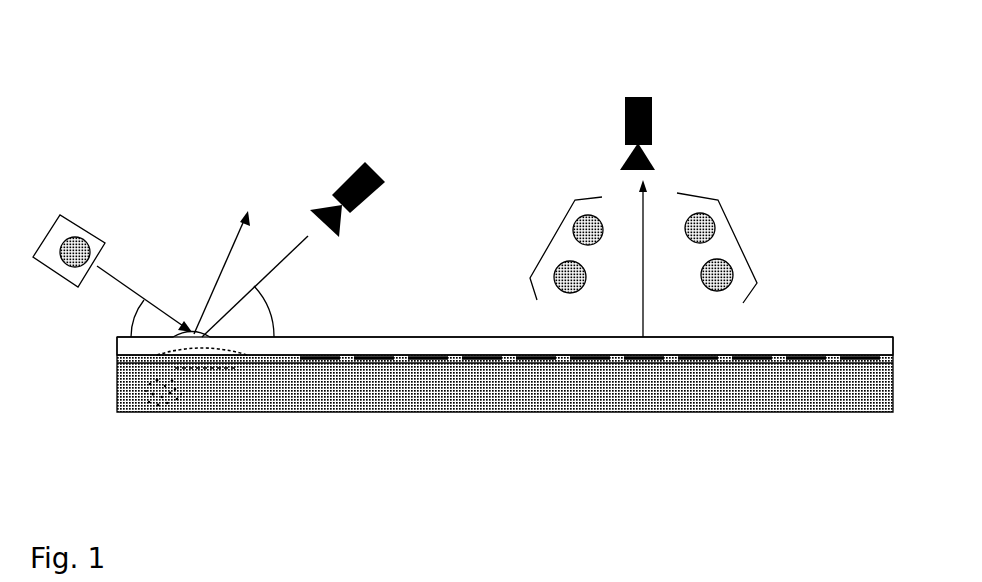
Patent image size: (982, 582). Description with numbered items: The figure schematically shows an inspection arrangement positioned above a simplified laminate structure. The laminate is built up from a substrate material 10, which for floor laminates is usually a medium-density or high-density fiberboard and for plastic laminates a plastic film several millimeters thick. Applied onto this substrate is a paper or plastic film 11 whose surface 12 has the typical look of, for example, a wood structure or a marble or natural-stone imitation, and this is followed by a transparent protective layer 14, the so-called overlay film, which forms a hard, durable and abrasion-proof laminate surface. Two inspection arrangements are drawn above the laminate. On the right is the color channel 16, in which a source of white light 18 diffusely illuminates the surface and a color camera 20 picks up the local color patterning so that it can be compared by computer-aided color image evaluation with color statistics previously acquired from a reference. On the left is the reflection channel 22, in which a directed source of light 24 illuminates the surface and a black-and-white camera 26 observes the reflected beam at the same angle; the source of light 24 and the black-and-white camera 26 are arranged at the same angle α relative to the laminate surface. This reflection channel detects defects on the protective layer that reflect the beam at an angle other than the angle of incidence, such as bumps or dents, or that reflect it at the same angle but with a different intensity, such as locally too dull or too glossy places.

The substrate material 10 is at (197, 398).
The paper or plastic film 11 is at (267, 360).
The surface 12 is at (387, 362).
The transparent protective layer 14 is at (345, 342).
The color channel 16 is at (715, 168).
The source of white light 18 is at (740, 248).
The color camera 20 is at (637, 97).
The reflection channel 22 is at (236, 186).
The source of light 24 is at (60, 216).
The black-and-white camera 26 is at (375, 193).